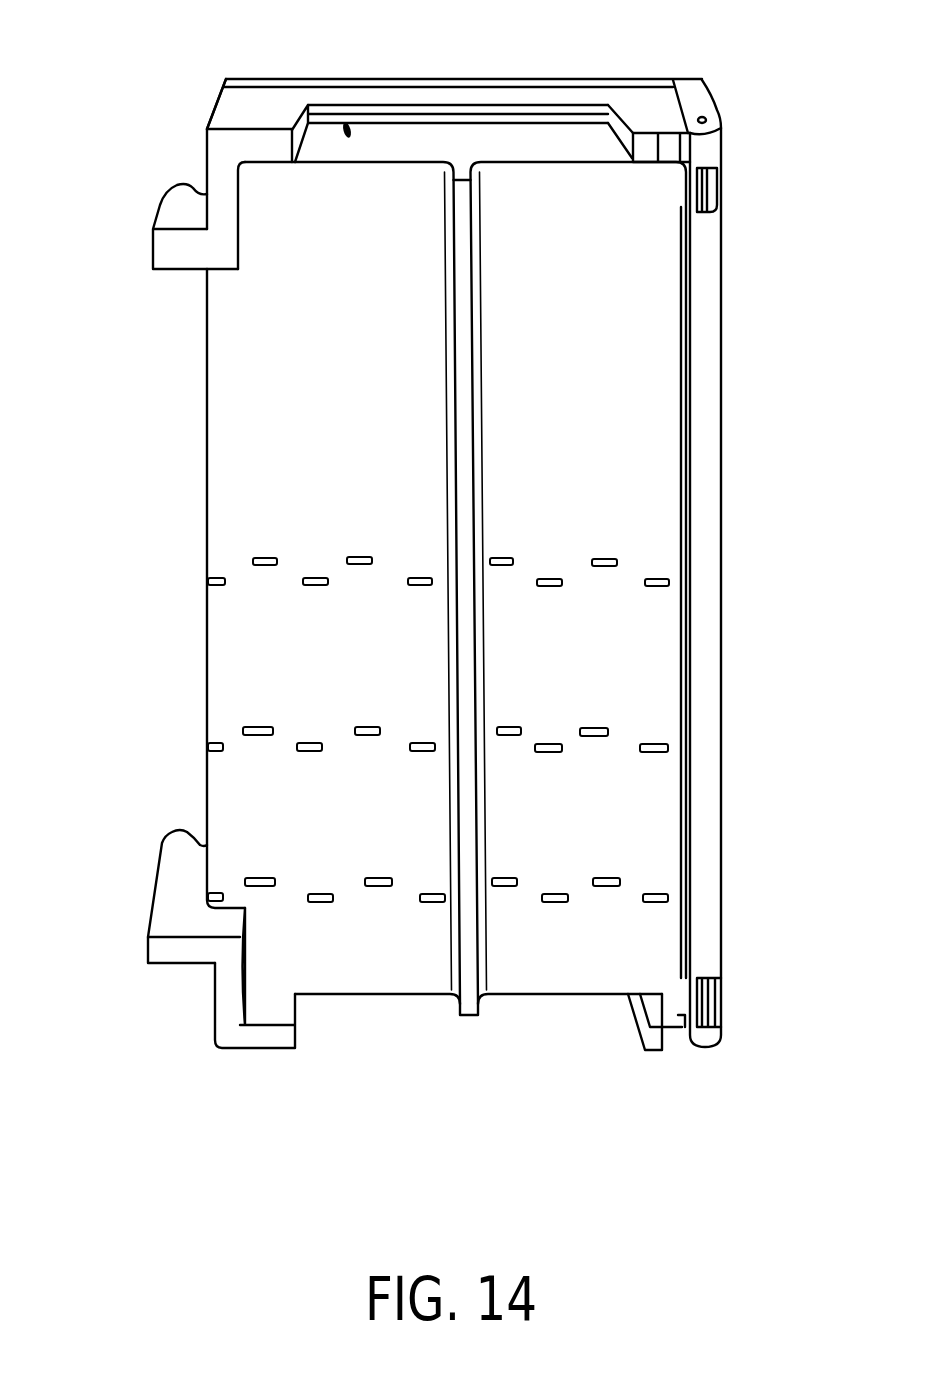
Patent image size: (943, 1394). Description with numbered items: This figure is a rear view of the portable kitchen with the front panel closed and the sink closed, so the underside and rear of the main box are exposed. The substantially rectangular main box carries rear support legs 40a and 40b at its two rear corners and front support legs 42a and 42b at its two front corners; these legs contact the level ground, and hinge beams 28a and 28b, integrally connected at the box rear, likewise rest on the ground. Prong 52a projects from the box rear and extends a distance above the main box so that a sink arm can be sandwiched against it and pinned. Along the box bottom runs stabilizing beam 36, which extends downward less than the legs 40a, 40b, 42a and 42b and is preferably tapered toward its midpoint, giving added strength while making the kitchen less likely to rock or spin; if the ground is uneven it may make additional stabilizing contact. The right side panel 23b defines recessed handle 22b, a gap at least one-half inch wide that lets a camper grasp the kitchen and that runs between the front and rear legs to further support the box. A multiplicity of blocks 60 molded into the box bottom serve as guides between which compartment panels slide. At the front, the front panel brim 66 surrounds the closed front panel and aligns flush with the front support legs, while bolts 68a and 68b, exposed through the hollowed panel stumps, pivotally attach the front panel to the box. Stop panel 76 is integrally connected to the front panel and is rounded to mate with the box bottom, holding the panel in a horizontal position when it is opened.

The recessed handle 22b is at (345, 138).
The right side panel 23b is at (292, 98).
The hinge beam 28a is at (167, 948).
The hinge beam 28b is at (168, 248).
The stabilizing beam 36 is at (465, 206).
The rear support leg 40a is at (267, 1042).
The rear support leg 40b is at (219, 117).
The front support leg 42a is at (657, 1043).
The front support leg 42b is at (650, 143).
The prong 52a is at (178, 833).
The blocks 60 is at (275, 556).
The front panel brim 66 is at (700, 100).
The front bolt 68a is at (712, 1003).
The front bolt 68b is at (710, 193).
The stop panel 76 is at (712, 892).